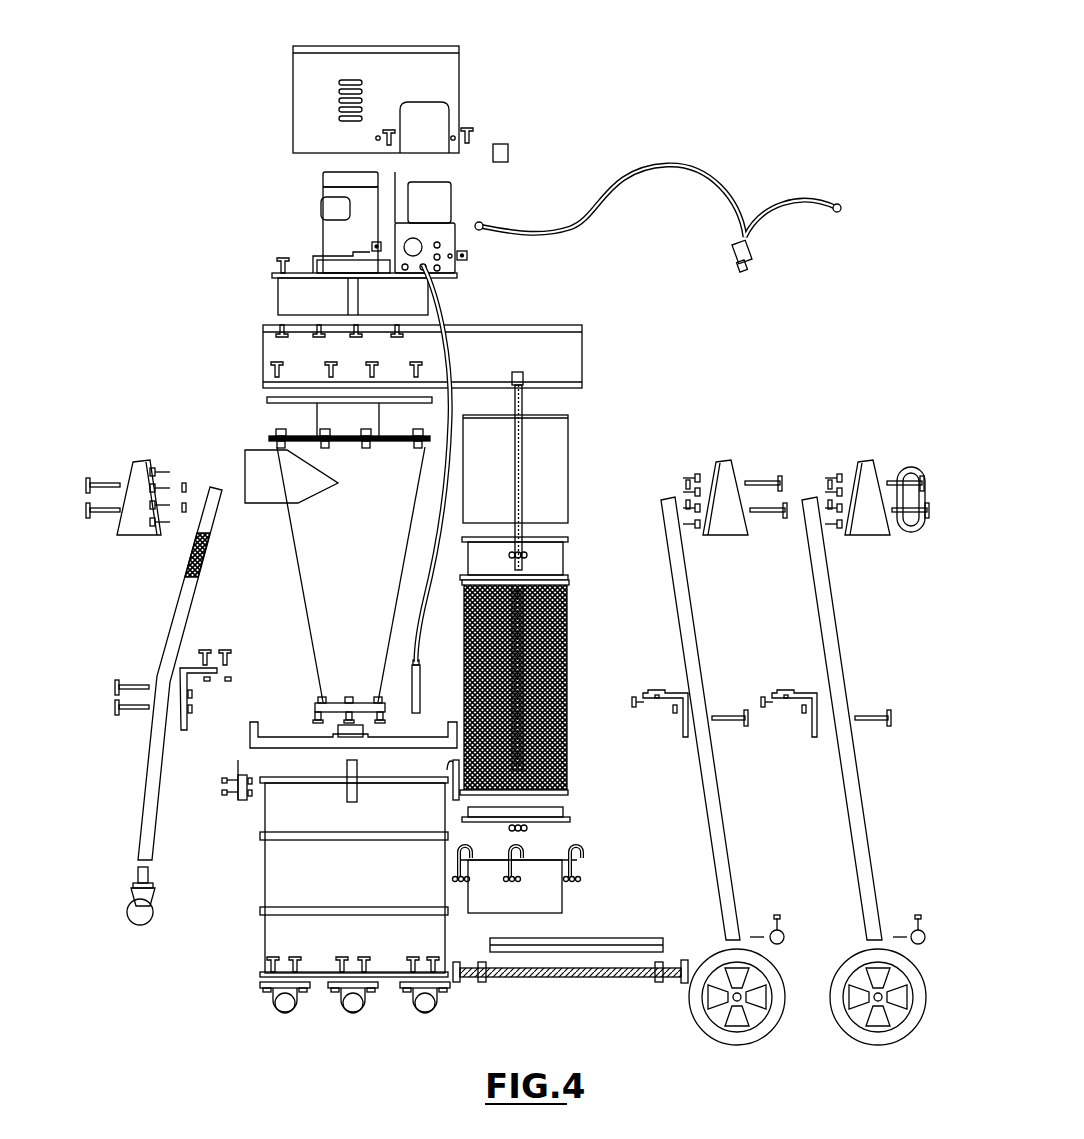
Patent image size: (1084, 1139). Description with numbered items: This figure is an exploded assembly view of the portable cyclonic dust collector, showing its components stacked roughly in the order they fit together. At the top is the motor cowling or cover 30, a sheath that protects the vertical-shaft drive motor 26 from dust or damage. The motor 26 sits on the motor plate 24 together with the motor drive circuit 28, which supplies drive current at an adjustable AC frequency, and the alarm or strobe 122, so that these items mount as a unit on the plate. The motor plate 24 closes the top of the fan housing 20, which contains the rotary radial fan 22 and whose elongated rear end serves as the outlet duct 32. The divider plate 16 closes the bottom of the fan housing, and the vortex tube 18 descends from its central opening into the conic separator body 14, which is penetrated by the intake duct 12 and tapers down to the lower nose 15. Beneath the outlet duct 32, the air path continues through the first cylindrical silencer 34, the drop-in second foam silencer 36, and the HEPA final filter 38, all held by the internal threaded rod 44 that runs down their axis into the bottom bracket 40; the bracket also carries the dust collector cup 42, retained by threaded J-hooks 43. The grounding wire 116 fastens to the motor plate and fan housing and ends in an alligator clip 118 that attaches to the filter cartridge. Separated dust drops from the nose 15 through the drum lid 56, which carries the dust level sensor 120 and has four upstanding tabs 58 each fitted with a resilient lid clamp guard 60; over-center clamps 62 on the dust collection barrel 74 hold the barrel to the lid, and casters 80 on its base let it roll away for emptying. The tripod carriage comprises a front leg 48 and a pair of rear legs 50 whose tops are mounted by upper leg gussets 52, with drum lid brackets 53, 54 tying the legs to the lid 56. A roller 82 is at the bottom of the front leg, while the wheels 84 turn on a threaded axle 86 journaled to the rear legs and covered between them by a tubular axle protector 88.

The intake duct 12 is at (262, 490).
The conic separator body 14 is at (302, 565).
The lower nose 15 is at (327, 668).
The divider plate 16 is at (275, 405).
The vortex tube 18 is at (347, 430).
The fan housing 20 is at (262, 365).
The rotary radial fan 22 is at (290, 292).
The motor plate 24 is at (448, 278).
The drive motor 26 is at (333, 246).
The motor drive circuit 28 is at (452, 208).
The motor cowling 30 is at (482, 50).
The outlet duct 32 is at (515, 340).
The first silencer 34 is at (555, 483).
The second foam silencer 36 is at (568, 555).
The HEPA final filter 38 is at (583, 730).
The bottom bracket 40 is at (565, 812).
The dust collector cup 42 is at (560, 892).
The threaded J-hooks 43 is at (575, 845).
The internal threaded rod 44 is at (522, 438).
The front leg 48 is at (170, 662).
The rear legs 50 is at (855, 833).
The upper leg gussets 52 is at (120, 533).
The drum lid bracket 53 is at (185, 658).
The drum lid brackets 54 is at (670, 695).
The drum lid 56 is at (427, 737).
The tabs 58 is at (250, 742).
The lid clamp guard 60 is at (342, 720).
The over-center clamps 62 is at (240, 805).
The dust collection barrel 74 is at (297, 873).
The casters 80 is at (418, 1015).
The roller 82 is at (130, 922).
The wheels 84 is at (852, 1030).
The threaded axle 86 is at (560, 978).
The axle protector 88 is at (625, 938).
The grounding wire 116 is at (806, 152).
The alligator clip 118 is at (752, 265).
The dust level sensor 120 is at (410, 655).
The alarm or strobe 122 is at (468, 256).